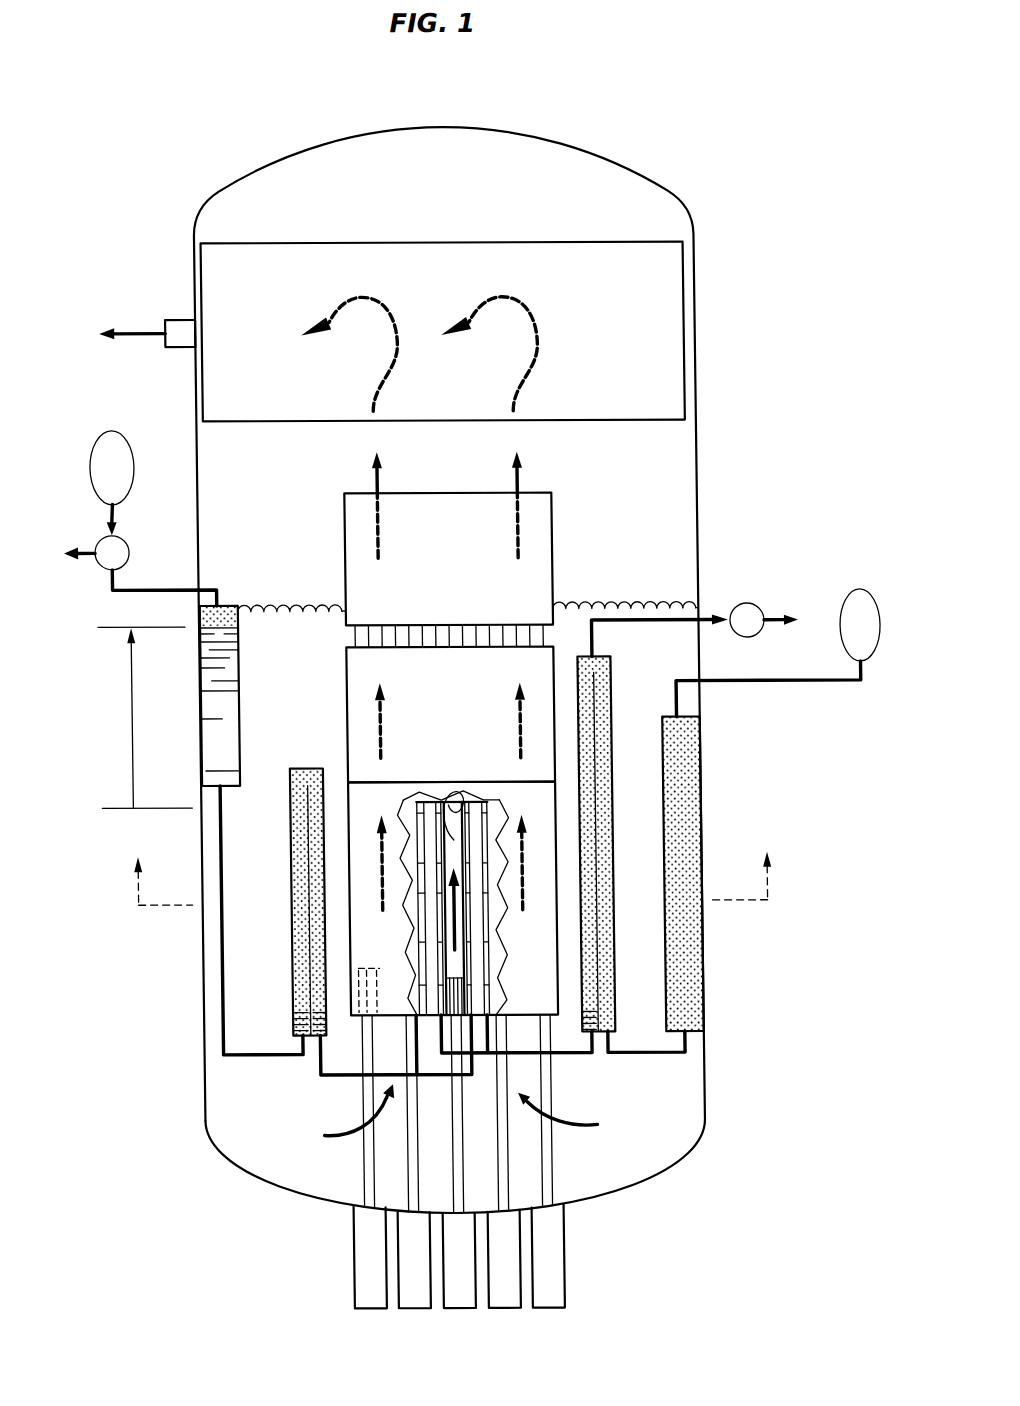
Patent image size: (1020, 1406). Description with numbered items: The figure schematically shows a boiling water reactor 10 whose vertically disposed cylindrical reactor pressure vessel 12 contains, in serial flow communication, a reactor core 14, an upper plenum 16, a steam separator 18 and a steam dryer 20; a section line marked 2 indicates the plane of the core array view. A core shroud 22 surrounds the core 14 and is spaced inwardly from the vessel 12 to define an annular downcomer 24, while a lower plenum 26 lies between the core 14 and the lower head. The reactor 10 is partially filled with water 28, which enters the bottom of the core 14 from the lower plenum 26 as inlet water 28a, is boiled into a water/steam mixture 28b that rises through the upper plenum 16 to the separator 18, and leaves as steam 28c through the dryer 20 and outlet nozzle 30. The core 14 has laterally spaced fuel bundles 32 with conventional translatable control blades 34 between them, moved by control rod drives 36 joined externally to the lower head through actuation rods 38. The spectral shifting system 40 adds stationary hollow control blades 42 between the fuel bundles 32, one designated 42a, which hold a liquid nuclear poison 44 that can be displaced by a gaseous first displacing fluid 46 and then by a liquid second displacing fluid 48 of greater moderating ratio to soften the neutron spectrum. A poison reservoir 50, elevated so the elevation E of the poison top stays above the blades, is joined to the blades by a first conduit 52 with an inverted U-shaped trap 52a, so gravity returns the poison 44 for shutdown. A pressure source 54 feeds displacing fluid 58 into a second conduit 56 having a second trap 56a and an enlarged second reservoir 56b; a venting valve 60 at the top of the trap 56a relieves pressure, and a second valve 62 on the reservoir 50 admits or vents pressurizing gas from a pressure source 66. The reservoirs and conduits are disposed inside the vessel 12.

The boiling water reactor 10 is at (728, 282).
The reactor pressure vessel 12 is at (704, 462).
The reactor core 14 is at (544, 1007).
The upper plenum 16 is at (493, 685).
The steam separator 18 is at (537, 612).
The steam dryer 20 is at (628, 398).
The core shroud 22 is at (347, 799).
The annular downcomer 24 is at (303, 681).
The lower plenum 26 is at (444, 1143).
The water 28 is at (630, 608).
The inlet water 28a is at (343, 1140).
The water/steam mixture 28b is at (371, 846).
The steam 28c is at (384, 482).
The outlet nozzle 30 is at (184, 316).
The fuel bundles 32 is at (455, 790).
The control blades 34 is at (442, 992).
The control rod drives 36 is at (557, 1243).
The actuation rods 38 is at (356, 1182).
The neutron spectral shifting system 40 is at (206, 993).
The hollow control blades 42 is at (485, 803).
The first hollow control blade 42a is at (426, 802).
The liquid nuclear poison 44 is at (214, 692).
The first displacing fluid 46 is at (290, 913).
The second displacing fluid 48 is at (415, 927).
The poison reservoir 50 is at (240, 760).
The first conduit 52 is at (252, 1058).
The first inverted U-shaped trap 52a is at (289, 845).
The pressure source 54 is at (873, 594).
The second conduit 56 is at (635, 1055).
The second trap 56a is at (612, 692).
The second reservoir 56b is at (663, 966).
The displacing fluid 58 is at (661, 777).
The venting valve 60 is at (757, 605).
The second valve 62 is at (131, 546).
The pressure source 66 is at (96, 452).
The elevation E is at (133, 701).
The section line for FIG. 2 is at (452, 862).